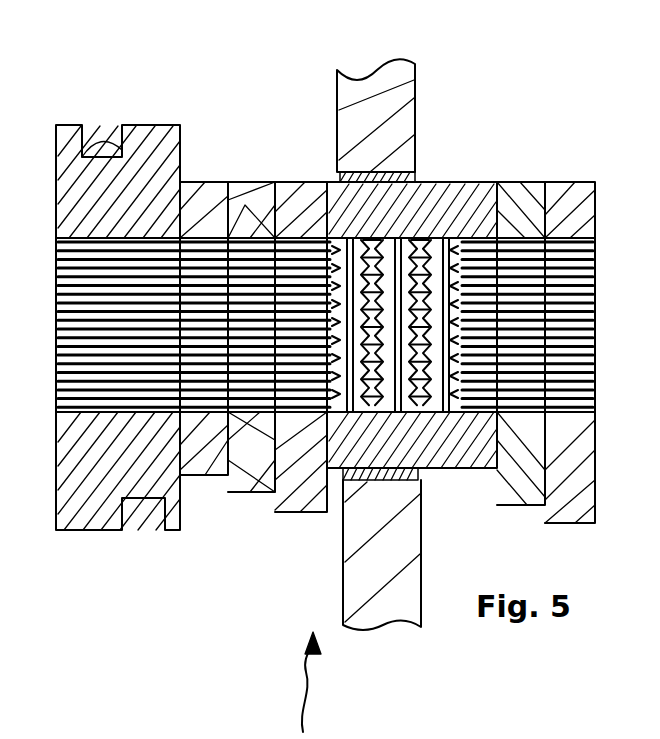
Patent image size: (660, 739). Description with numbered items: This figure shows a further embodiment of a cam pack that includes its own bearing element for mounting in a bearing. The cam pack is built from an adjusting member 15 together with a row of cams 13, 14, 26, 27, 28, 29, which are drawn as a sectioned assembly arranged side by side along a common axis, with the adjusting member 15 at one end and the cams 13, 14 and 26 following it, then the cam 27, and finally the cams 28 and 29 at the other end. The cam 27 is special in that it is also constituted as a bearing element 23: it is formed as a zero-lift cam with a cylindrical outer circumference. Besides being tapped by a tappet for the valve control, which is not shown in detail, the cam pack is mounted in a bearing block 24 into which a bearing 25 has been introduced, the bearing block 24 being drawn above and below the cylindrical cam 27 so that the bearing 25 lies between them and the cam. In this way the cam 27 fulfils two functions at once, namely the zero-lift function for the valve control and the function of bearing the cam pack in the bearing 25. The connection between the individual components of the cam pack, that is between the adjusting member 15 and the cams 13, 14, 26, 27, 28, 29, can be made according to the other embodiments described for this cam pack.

The cam 13 is at (205, 477).
The cam 14 is at (250, 494).
The adjusting member 15 is at (85, 532).
The bearing element 23 is at (322, 183).
The bearing block 24 is at (418, 92).
The bearing 25 is at (418, 172).
The cam 26 is at (305, 515).
The cam 27 is at (458, 470).
The cam 28 is at (508, 507).
The cam 29 is at (575, 523).